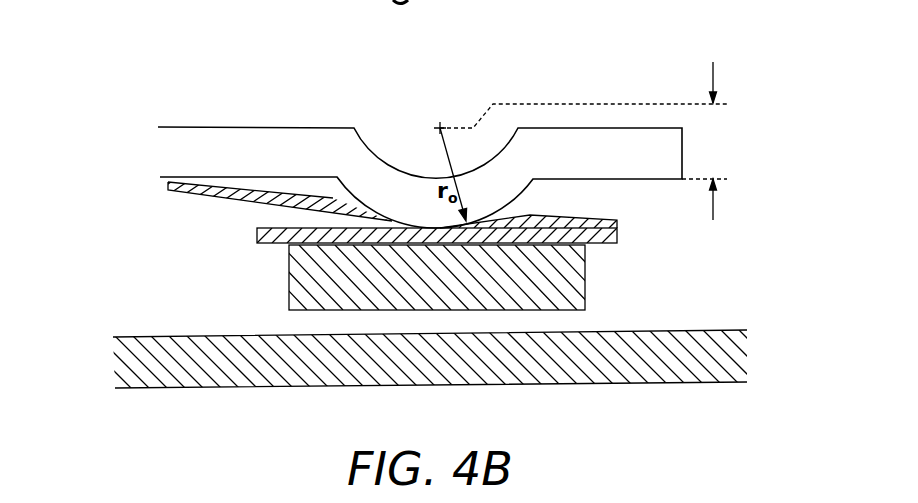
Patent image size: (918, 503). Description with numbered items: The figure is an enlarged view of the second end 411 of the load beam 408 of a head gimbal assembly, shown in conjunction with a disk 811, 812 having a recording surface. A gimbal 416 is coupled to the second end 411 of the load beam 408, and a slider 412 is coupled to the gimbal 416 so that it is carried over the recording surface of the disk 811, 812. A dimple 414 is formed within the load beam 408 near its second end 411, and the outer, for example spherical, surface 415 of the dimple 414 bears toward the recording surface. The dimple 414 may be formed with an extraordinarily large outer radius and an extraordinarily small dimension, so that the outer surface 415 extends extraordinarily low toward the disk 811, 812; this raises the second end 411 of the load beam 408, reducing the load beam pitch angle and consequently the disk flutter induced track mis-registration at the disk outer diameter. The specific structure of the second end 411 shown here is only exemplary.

The load beam 408 is at (173, 148).
The second end 411 is at (612, 59).
The slider 412 is at (578, 268).
The dimple 414 is at (507, 193).
The outer surface 415 is at (335, 246).
The gimbal 416 is at (240, 204).
The disk 811 is at (426, 335).
The disk 812 is at (713, 330).